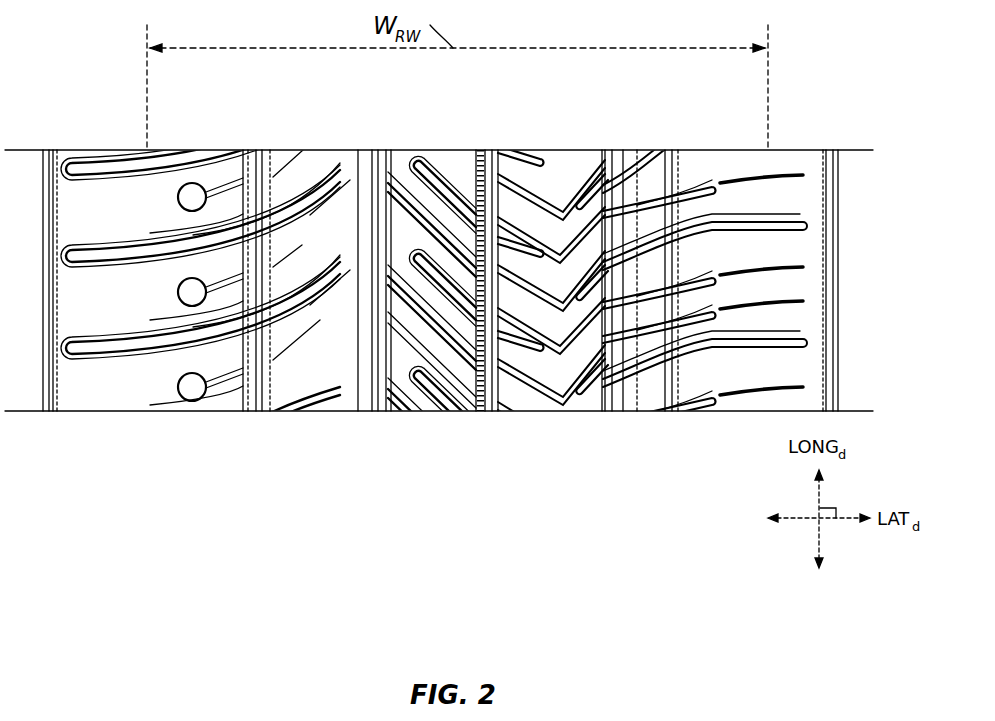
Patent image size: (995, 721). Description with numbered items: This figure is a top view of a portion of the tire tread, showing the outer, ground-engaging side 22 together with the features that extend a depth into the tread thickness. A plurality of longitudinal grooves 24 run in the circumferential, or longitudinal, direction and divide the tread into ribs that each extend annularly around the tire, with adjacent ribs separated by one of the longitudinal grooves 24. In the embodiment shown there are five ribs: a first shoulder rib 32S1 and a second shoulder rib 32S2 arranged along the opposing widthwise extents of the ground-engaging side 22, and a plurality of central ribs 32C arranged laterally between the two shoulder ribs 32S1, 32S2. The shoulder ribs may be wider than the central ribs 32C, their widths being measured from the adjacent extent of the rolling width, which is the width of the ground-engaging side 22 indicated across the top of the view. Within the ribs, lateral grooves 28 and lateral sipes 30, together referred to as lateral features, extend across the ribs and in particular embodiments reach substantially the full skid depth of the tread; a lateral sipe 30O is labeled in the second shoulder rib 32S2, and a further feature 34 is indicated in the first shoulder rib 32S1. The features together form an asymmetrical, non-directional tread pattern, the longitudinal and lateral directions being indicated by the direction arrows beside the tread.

The outer, ground-engaging side 22 is at (160, 190).
The longitudinal groove 24 is at (258, 150).
The lateral groove 28 is at (313, 183).
The lateral sipe 30 is at (712, 182).
The outboard lateral groove 30O is at (185, 400).
The circumferential sipe 34 is at (672, 150).
The second shoulder rib 32S2 is at (150, 520).
The central rib 32C is at (290, 520).
The first shoulder rib 32S1 is at (660, 520).